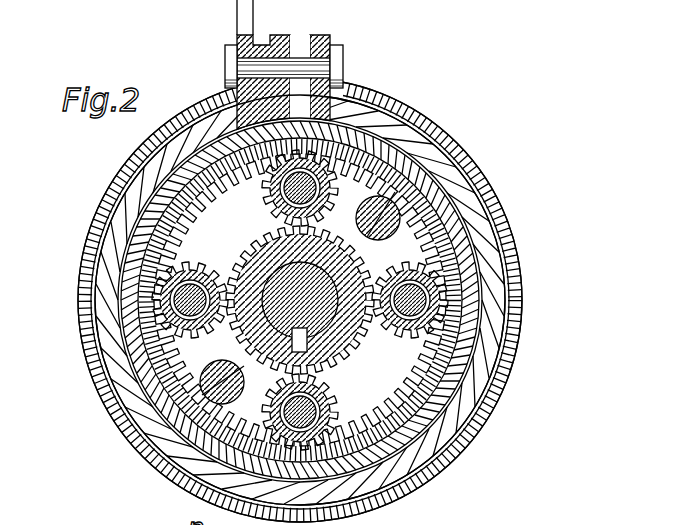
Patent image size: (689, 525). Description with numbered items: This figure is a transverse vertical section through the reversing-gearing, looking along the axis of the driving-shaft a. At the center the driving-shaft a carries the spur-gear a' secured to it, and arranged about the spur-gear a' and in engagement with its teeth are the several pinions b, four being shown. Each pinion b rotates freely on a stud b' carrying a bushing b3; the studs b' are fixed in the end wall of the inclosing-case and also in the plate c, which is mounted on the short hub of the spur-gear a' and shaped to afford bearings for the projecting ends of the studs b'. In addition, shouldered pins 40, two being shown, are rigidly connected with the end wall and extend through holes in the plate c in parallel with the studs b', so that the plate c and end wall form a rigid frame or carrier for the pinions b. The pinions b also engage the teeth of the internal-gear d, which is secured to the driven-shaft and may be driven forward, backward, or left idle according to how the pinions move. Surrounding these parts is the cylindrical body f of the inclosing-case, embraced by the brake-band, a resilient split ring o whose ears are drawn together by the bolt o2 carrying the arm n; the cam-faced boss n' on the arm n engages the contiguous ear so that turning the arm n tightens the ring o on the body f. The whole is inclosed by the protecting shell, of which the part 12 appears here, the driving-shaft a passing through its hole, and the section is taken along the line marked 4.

The casing 4 is at (458, 138).
The shouldered pins 40 is at (418, 113).
The plate c is at (173, 487).
The split ring o is at (328, 34).
The bolt o2 is at (327, 63).
The arm n is at (214, 17).
The cam-faced boss n' is at (264, 66).
The cylindrical body f is at (472, 182).
The internal-gear d is at (497, 217).
The protecting shell part 12 is at (522, 258).
The driving-shaft a is at (323, 293).
The spur-gear a' is at (296, 300).
The pinions b is at (300, 300).
The studs b' is at (377, 300).
The bushings b3 is at (410, 250).